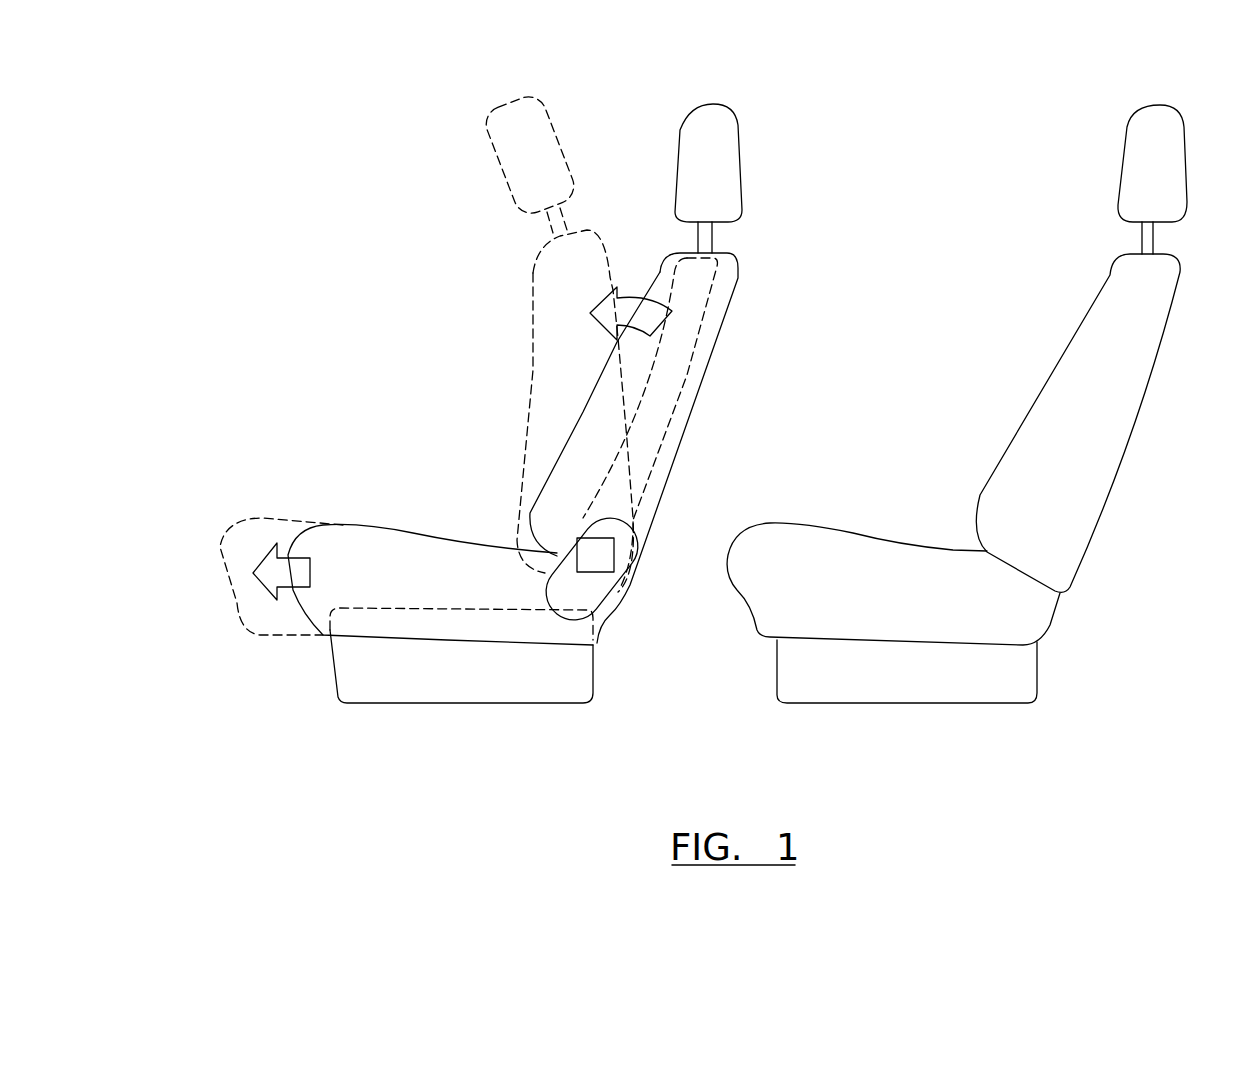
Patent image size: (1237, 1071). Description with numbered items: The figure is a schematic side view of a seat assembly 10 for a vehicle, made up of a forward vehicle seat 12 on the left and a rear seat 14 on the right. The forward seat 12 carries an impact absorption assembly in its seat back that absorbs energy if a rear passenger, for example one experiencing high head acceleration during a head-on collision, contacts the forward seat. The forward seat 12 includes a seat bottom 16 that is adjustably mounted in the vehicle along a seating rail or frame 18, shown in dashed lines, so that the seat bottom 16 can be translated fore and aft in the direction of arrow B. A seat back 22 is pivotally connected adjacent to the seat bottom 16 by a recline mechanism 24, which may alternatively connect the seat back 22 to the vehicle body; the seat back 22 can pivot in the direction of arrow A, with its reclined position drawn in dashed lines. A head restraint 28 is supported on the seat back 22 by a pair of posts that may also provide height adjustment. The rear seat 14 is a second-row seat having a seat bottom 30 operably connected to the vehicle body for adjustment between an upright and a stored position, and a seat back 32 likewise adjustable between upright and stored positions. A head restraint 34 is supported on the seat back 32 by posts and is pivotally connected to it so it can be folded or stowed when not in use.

The seat assembly 10 is at (341, 96).
The forward vehicle seat 12 is at (731, 304).
The rear seat 14 is at (1100, 291).
The seat bottom 16 is at (350, 523).
The seating rail or frame 18 is at (687, 375).
The seat back 22 is at (587, 418).
The recline mechanism 24 is at (592, 569).
The head restraint 28 is at (680, 158).
The seat bottom 30 is at (913, 547).
The seat back 32 is at (1053, 368).
The head restraint 34 is at (1123, 165).